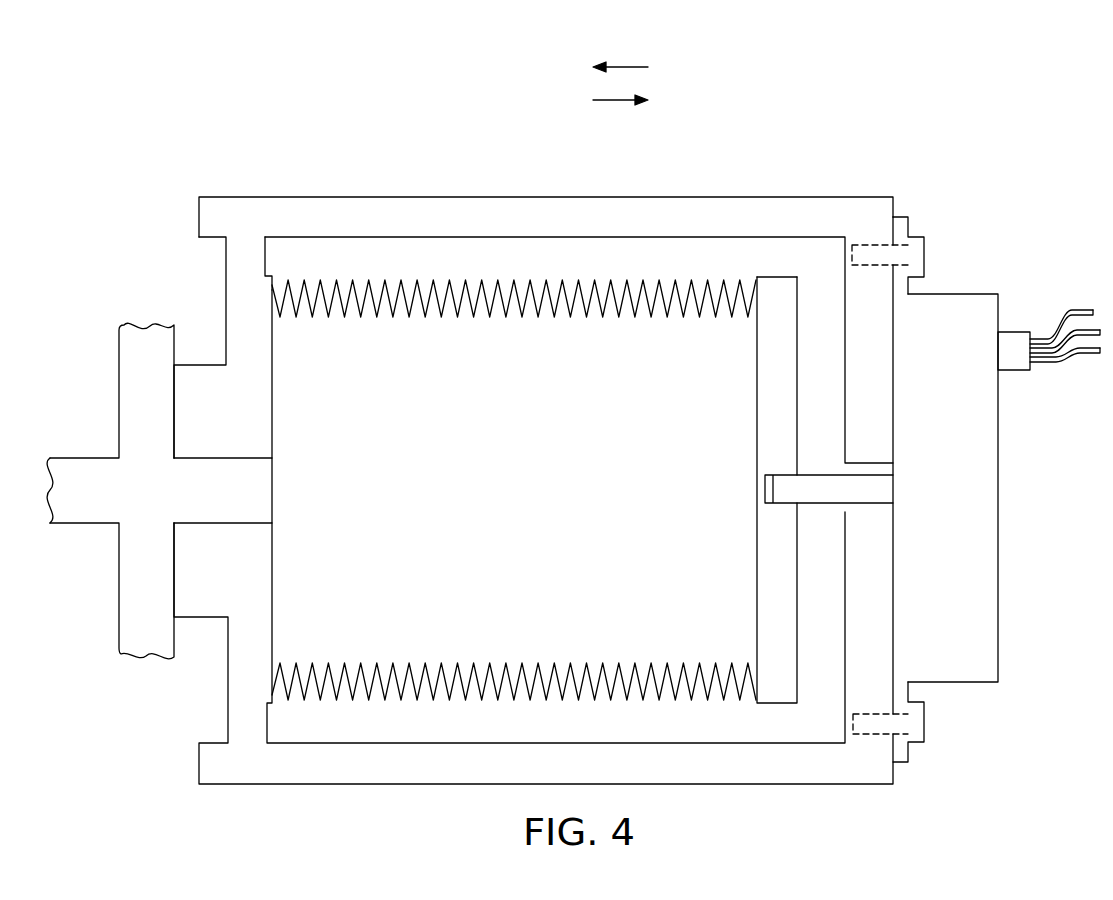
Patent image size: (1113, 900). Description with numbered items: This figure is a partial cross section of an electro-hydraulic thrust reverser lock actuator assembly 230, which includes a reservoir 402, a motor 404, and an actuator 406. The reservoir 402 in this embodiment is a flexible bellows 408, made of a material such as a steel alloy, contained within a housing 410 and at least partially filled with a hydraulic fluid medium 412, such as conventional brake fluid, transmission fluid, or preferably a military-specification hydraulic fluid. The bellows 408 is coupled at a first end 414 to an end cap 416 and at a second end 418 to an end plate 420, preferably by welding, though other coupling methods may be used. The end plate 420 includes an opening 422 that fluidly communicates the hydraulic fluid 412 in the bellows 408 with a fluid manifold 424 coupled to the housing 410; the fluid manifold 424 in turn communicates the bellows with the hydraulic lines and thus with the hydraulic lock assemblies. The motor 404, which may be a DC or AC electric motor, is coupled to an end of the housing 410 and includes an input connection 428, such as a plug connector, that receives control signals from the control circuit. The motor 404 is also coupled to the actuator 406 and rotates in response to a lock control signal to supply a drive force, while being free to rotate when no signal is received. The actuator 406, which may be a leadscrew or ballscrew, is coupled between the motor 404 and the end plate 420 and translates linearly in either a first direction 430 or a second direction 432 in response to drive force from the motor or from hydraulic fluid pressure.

The lock actuator assembly 230 is at (810, 163).
The reservoir 402 is at (626, 232).
The motor 404 is at (988, 530).
The actuator 406 is at (810, 483).
The flexible bellows 408 is at (538, 322).
The housing 410 is at (357, 197).
The hydraulic fluid medium 412 is at (673, 502).
The first end 414 is at (270, 283).
The end cap 416 is at (268, 372).
The second end 418 is at (752, 273).
The end plate 420 is at (760, 370).
The opening 422 is at (205, 492).
The fluid manifold 424 is at (127, 407).
The input connection 428 is at (1015, 335).
The first direction 430 is at (628, 67).
The second direction 432 is at (605, 100).